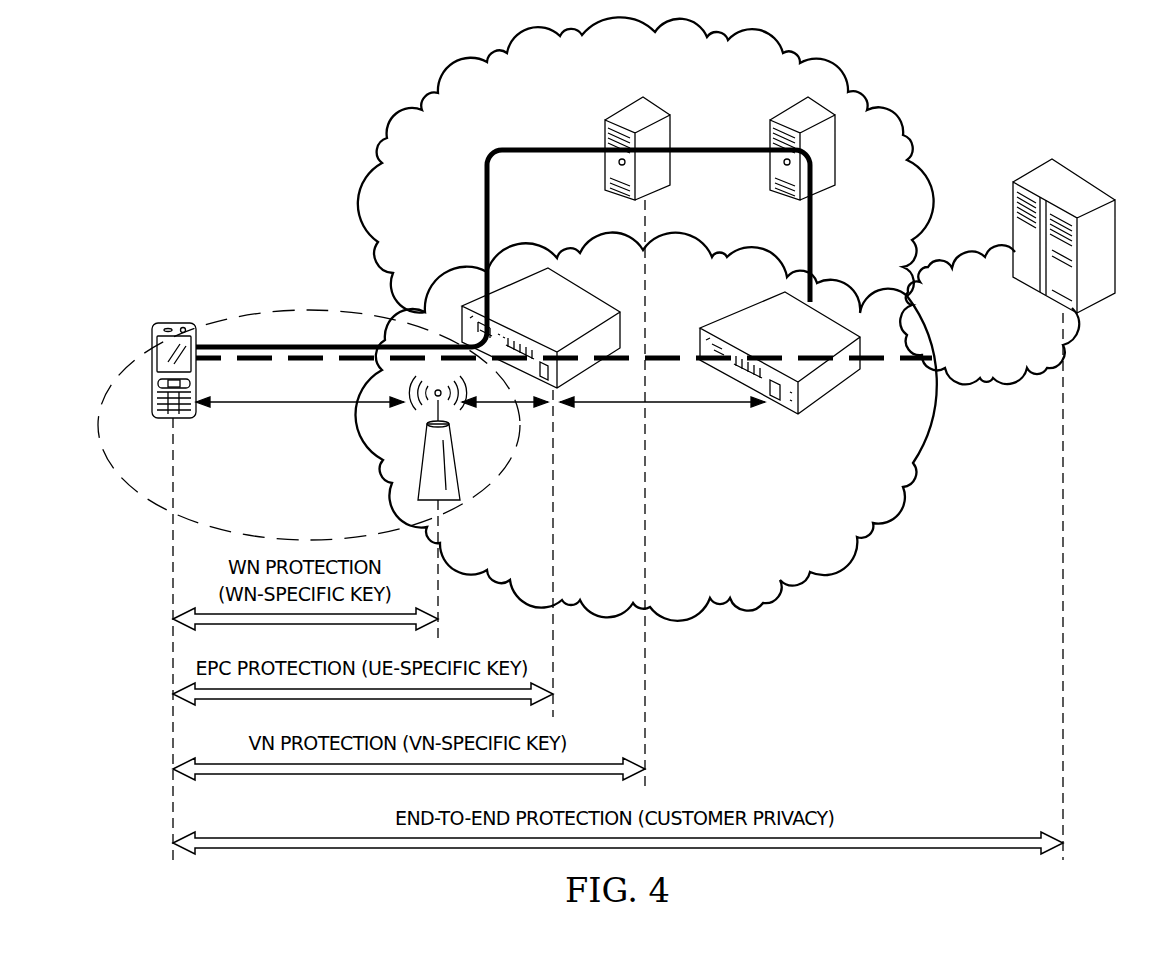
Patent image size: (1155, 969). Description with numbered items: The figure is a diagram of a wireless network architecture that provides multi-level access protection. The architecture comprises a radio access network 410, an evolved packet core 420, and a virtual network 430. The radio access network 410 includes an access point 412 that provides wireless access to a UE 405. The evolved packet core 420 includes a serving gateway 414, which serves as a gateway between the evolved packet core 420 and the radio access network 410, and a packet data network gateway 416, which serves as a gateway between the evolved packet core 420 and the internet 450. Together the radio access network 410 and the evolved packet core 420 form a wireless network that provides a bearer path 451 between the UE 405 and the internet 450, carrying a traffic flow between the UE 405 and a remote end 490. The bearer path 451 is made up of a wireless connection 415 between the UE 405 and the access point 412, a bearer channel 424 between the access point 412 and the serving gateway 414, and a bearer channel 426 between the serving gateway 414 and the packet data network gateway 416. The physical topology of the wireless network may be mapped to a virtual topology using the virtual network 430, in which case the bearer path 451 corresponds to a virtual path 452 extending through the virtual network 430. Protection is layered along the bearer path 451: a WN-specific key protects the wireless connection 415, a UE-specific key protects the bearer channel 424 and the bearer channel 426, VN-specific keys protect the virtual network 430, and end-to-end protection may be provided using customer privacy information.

The UE 405 is at (162, 322).
The radio access network 410 is at (278, 312).
The access point 412 is at (452, 455).
The serving gateway 414 is at (626, 318).
The wireless connection 415 is at (278, 404).
The packet data network gateway 416 is at (749, 312).
The evolved packet core 420 is at (760, 605).
The bearer channel 424 is at (530, 408).
The bearer channel 426 is at (665, 404).
The virtual network 430 is at (838, 72).
The internet 450 is at (1070, 342).
The bearer path 451 is at (652, 358).
The virtual path 452 is at (552, 150).
The remote end 490 is at (1083, 176).